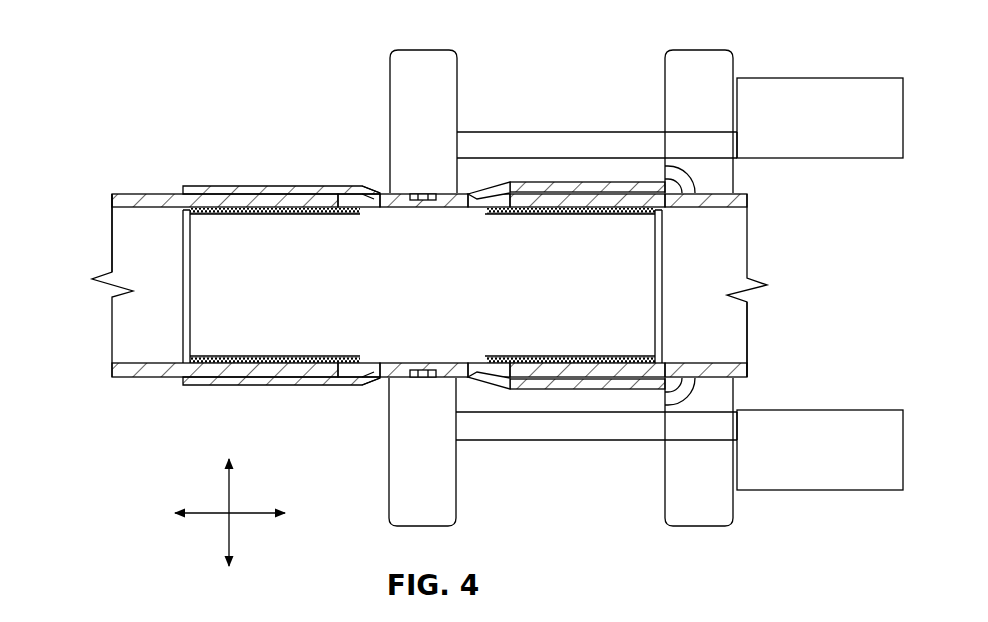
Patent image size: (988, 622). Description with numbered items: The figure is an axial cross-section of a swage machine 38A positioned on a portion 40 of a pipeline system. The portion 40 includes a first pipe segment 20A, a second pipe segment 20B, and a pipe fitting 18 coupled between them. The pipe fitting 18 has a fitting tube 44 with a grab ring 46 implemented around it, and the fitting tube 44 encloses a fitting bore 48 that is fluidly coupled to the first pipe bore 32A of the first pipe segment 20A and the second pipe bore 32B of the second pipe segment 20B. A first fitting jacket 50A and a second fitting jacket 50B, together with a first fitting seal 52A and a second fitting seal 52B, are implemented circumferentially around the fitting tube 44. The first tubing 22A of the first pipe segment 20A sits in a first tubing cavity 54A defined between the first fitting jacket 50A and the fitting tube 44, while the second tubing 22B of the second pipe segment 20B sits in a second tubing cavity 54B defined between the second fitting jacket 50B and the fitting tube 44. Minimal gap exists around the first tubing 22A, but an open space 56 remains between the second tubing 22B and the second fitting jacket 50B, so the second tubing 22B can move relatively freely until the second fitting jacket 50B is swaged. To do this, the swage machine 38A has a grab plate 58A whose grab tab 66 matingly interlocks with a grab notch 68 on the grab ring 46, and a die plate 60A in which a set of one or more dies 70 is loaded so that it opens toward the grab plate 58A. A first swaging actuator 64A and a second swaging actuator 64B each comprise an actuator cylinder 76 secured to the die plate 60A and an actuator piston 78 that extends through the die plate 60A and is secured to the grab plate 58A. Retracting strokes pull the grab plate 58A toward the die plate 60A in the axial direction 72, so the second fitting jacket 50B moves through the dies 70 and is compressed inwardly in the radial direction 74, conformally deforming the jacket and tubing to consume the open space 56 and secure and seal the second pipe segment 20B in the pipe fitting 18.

The pipe fitting 18 is at (286, 118).
The first pipe segment 20A is at (162, 191).
The second pipe segment 20B is at (754, 210).
The first tubing 22A is at (128, 194).
The second tubing 22B is at (748, 372).
The first pipe bore 32A is at (170, 277).
The second pipe bore 32B is at (722, 292).
The swage machine 38A is at (564, 79).
The portion of pipeline system 40 is at (182, 110).
The fitting tube 44 is at (183, 310).
The grab ring 46 is at (383, 193).
The fitting bore 48 is at (440, 297).
The first fitting jacket 50A is at (243, 186).
The second fitting jacket 50B is at (607, 194).
The first fitting seal 52A is at (196, 214).
The second fitting seal 52B is at (650, 214).
The first tubing cavity 54A is at (352, 190).
The second tubing cavity 54B is at (478, 198).
The open space 56 is at (555, 192).
The grab plate 58A is at (413, 50).
The die plate 60A is at (688, 50).
The first swaging actuator 64A is at (824, 69).
The second swaging actuator 64B is at (833, 395).
The grab tab 66 is at (432, 208).
The grab notch 68 is at (412, 208).
The dies 70 is at (698, 188).
The axial direction 72 is at (255, 512).
The radial direction 74 is at (229, 485).
The actuator cylinder 76 is at (850, 158).
The actuator piston 78 is at (598, 132).